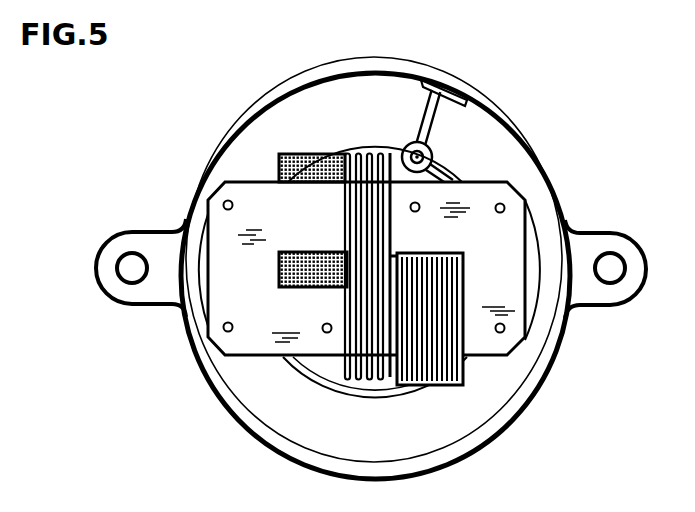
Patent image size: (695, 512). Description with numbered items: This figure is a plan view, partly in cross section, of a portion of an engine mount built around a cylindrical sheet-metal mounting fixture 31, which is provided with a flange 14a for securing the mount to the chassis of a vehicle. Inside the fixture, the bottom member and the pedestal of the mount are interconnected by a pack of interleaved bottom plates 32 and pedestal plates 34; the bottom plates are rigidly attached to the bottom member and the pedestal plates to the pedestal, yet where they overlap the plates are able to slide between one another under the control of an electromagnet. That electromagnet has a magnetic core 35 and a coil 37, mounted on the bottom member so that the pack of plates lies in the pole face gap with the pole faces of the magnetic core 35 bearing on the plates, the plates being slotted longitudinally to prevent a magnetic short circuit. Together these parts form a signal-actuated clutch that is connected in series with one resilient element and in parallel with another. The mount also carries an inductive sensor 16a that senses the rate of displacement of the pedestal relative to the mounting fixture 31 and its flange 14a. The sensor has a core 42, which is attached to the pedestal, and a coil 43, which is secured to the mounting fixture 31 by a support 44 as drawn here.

The flange 14a is at (132, 236).
The inductive sensor 16a is at (419, 131).
The mounting fixture 31 is at (562, 352).
The bottom plates 32 is at (334, 292).
The pedestal plates 34 is at (360, 375).
The magnetic core 35 is at (506, 290).
The coil 37 is at (432, 388).
The core 42 is at (411, 147).
The coil 43 is at (424, 158).
The support 44 is at (447, 123).